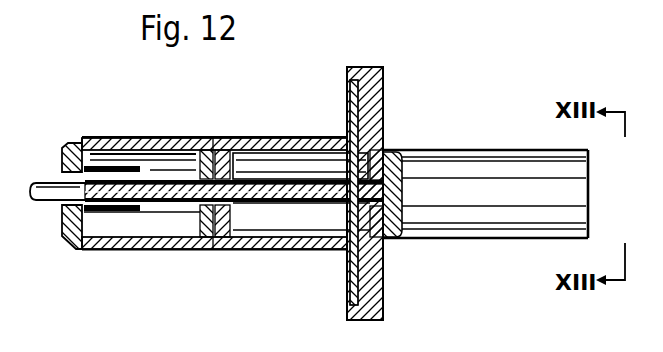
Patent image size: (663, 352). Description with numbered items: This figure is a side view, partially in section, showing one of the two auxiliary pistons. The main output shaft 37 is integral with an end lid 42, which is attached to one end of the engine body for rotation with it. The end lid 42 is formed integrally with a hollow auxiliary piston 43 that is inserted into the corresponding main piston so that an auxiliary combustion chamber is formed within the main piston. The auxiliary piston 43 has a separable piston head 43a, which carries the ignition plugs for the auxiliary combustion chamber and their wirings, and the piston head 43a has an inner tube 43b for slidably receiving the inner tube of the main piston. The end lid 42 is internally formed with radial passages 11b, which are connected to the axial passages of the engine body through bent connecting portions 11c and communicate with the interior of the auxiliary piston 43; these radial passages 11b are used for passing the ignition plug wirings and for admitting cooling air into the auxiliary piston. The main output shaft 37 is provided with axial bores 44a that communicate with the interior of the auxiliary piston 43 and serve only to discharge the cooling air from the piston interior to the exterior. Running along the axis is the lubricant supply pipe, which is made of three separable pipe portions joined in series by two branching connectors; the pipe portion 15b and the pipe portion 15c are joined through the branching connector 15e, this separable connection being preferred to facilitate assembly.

The auxiliary piston 43 is at (190, 138).
The piston head 43a is at (60, 156).
The inner tube 43b is at (122, 212).
The branching connector 15e is at (248, 138).
The pipe portion 15c is at (272, 204).
The pipe portion 15b is at (50, 202).
The end lid 42 is at (377, 184).
The radial passage 11b is at (384, 116).
The bent connecting portion 11c is at (350, 82).
The axial bore 44a is at (418, 197).
The main output shaft 37 is at (493, 213).